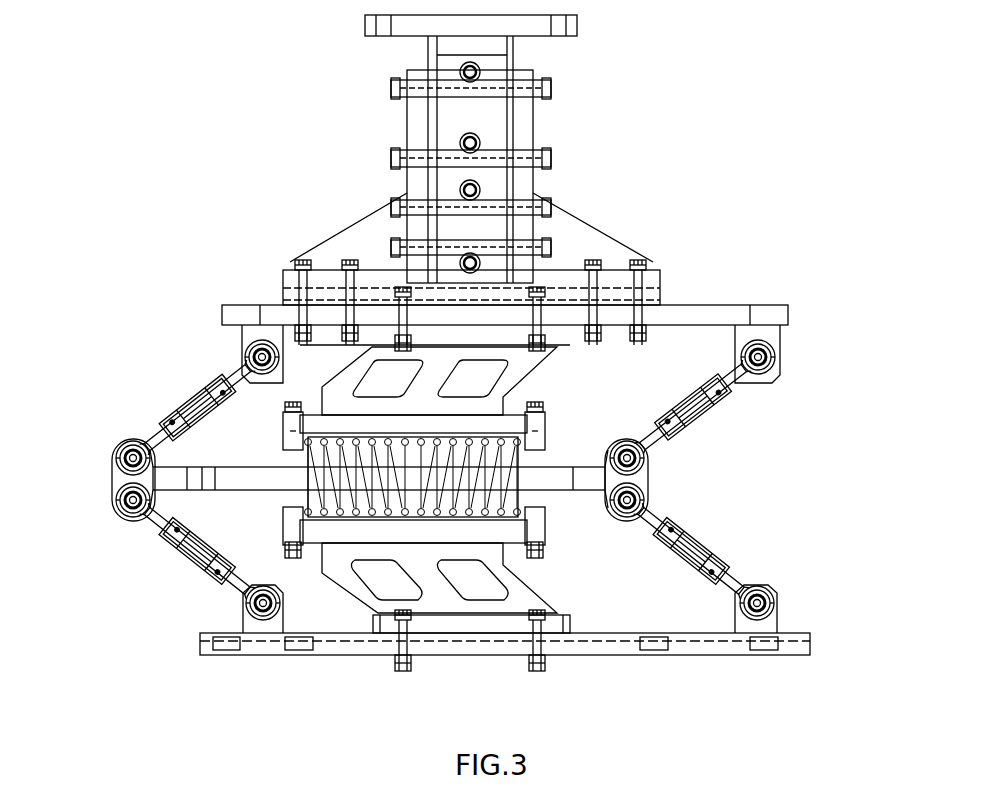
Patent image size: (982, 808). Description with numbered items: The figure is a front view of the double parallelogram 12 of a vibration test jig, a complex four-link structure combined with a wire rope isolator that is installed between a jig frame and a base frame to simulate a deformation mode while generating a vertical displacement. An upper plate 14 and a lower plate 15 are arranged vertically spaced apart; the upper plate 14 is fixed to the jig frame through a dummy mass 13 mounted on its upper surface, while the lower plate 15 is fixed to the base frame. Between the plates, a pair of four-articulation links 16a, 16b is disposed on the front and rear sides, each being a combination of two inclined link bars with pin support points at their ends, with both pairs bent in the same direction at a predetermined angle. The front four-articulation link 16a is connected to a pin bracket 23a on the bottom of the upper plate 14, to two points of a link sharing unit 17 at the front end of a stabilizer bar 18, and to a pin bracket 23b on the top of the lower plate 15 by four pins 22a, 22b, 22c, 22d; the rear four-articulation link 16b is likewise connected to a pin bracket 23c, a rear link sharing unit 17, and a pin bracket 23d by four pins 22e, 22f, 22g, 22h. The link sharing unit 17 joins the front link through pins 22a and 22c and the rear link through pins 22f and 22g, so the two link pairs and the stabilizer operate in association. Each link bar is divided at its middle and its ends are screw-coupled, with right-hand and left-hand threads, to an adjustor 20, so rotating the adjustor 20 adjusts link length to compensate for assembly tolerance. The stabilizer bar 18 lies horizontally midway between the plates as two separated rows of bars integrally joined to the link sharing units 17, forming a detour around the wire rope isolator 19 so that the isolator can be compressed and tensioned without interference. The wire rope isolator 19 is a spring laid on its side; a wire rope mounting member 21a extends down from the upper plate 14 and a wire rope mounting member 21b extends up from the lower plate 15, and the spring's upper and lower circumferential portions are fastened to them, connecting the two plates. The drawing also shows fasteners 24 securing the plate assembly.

The double parallelogram 12 is at (780, 280).
The dummy mass 13 is at (498, 118).
The upper plate 14 is at (715, 307).
The lower plate 15 is at (735, 655).
The four-articulation link 16a is at (104, 507).
The four-articulation link 16b is at (722, 487).
The link sharing unit 17 is at (115, 478).
The stabilizer bar 18 is at (567, 482).
The wire rope isolator 19 is at (463, 530).
The adjustor 20 is at (165, 420).
The wire rope mounting member 21a is at (518, 376).
The wire rope mounting member 21b is at (352, 588).
The pin 22a is at (245, 355).
The pin 22b is at (117, 448).
The pin 22c is at (118, 515).
The pin 22d is at (243, 600).
The pin 22e is at (778, 358).
The pin 22f is at (648, 452).
The pin 22g is at (650, 505).
The pin 22h is at (778, 590).
The pin bracket 23a is at (222, 314).
The pin bracket 23b is at (273, 625).
The pin bracket 23c is at (782, 330).
The pin bracket 23d is at (772, 622).
The fastening bolt 24 is at (613, 283).